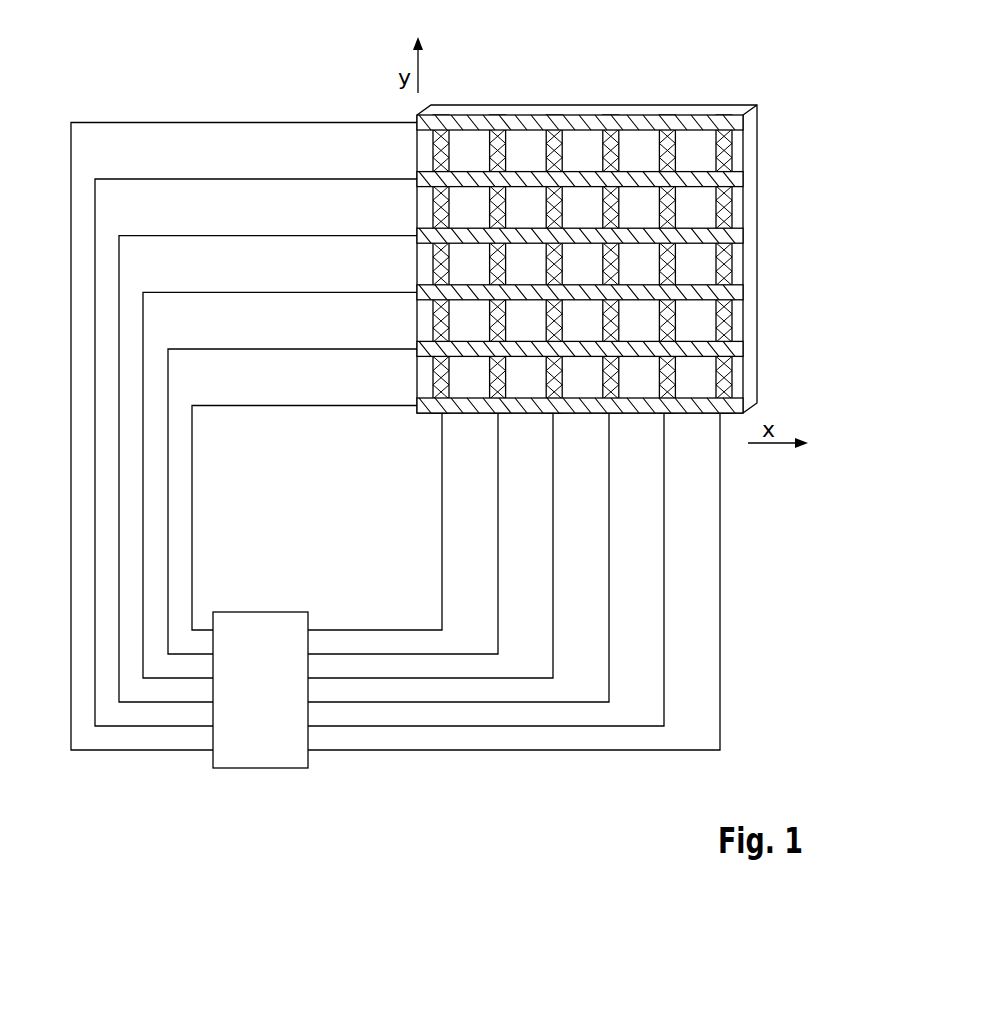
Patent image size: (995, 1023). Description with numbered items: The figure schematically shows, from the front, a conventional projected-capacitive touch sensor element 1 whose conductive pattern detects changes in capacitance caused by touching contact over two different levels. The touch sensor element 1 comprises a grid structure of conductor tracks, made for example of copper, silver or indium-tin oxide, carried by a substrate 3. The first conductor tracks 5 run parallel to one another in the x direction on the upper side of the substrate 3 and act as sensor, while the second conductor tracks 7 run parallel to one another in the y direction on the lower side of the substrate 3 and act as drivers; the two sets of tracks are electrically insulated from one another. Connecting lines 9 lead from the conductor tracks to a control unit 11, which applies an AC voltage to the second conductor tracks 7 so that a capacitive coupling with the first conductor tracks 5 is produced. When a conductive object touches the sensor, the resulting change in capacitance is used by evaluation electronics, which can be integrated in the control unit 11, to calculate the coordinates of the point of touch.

The projected-capacitive touch sensor element 1 is at (436, 414).
The substrate 3 is at (609, 259).
The first conductor tracks 5 is at (735, 178).
The second conductor tracks 7 is at (730, 280).
The connecting lines 9 is at (720, 565).
The control unit 11 is at (260, 755).